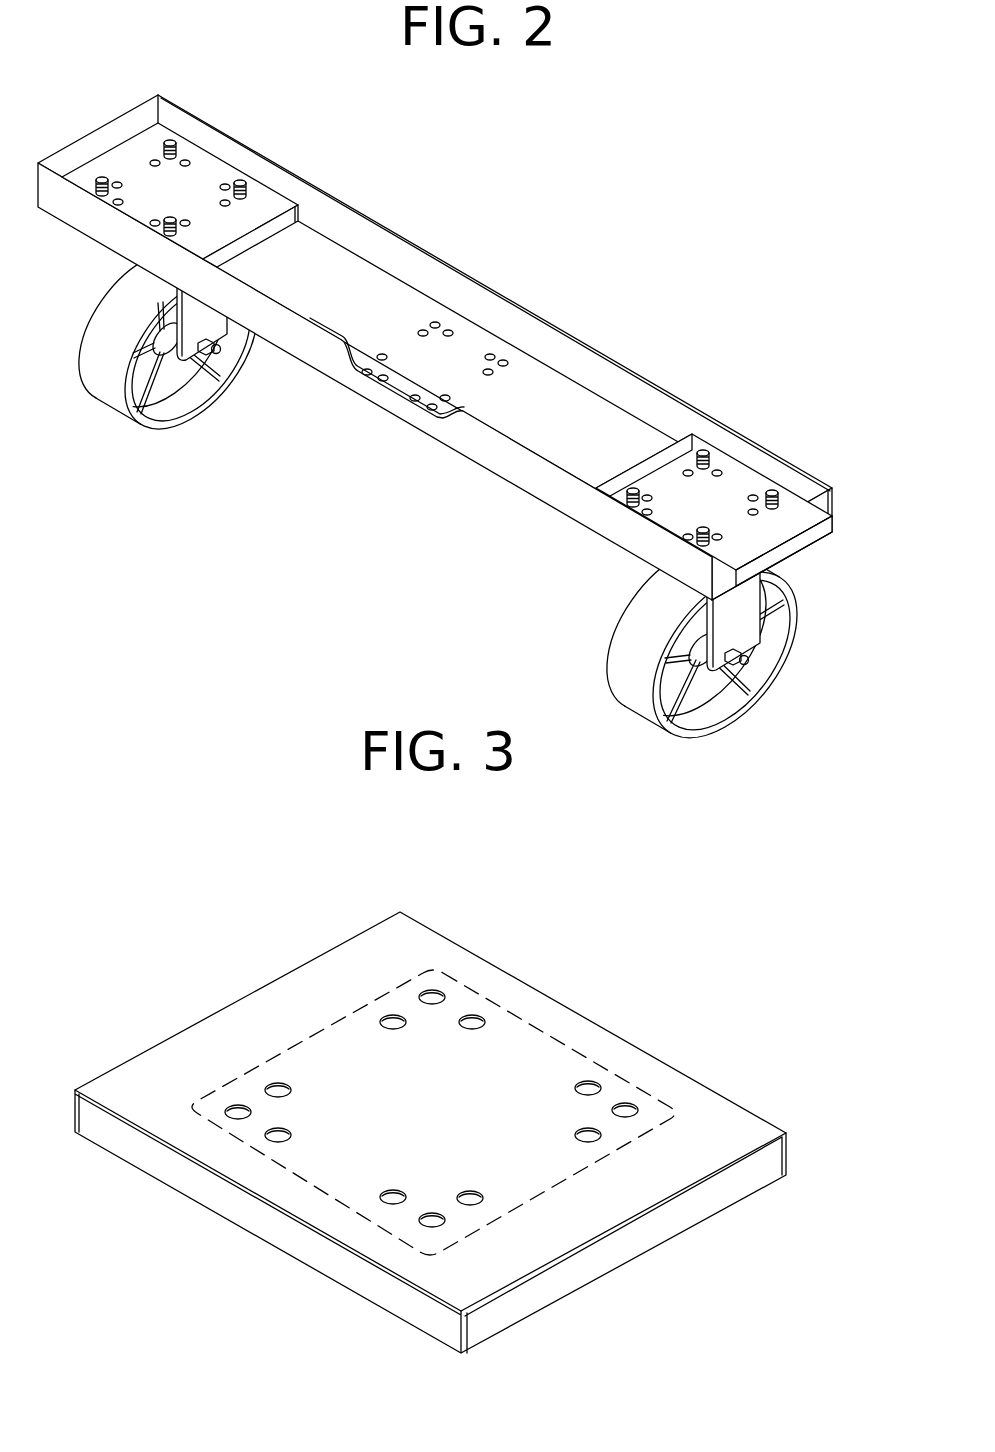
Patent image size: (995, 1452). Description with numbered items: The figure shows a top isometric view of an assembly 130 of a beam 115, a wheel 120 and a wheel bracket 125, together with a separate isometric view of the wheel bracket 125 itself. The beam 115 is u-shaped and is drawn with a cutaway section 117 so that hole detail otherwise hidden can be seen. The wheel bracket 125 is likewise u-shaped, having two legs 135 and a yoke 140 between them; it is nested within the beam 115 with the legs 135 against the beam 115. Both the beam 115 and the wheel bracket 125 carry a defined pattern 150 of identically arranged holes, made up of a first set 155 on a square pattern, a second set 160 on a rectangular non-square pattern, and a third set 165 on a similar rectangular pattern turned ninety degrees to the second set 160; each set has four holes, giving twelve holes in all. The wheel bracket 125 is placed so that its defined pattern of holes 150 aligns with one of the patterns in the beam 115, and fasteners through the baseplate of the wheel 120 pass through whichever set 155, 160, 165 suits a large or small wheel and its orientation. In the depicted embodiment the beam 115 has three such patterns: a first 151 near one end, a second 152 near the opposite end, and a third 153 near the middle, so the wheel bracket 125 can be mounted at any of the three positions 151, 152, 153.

In FIG. 2, the beam 115 is at (360, 208).
In FIG. 2, the cutaway section 117 is at (447, 420).
In FIG. 2, the wheel 120 is at (697, 738).
In FIG. 2, the wheel bracket 125 is at (731, 434).
In FIG. 3, the wheel bracket 125 is at (471, 1087).
In FIG. 2, the assembly 130 is at (452, 442).
In FIG. 3, the legs 135 is at (790, 1150).
In FIG. 3, the yoke 140 is at (223, 1007).
In FIG. 2, the defined pattern of holes 150 is at (464, 343).
In FIG. 3, the defined pattern of holes 150 is at (515, 1213).
In FIG. 2, the first defined pattern of holes 151 is at (700, 505).
In FIG. 2, the second defined pattern of holes 152 is at (187, 193).
In FIG. 2, the third defined pattern of holes 153 is at (437, 363).
In FIG. 3, the first set of holes 155 is at (432, 990).
In FIG. 3, the second set of holes 160 is at (475, 1017).
In FIG. 3, the third set of holes 165 is at (391, 1013).